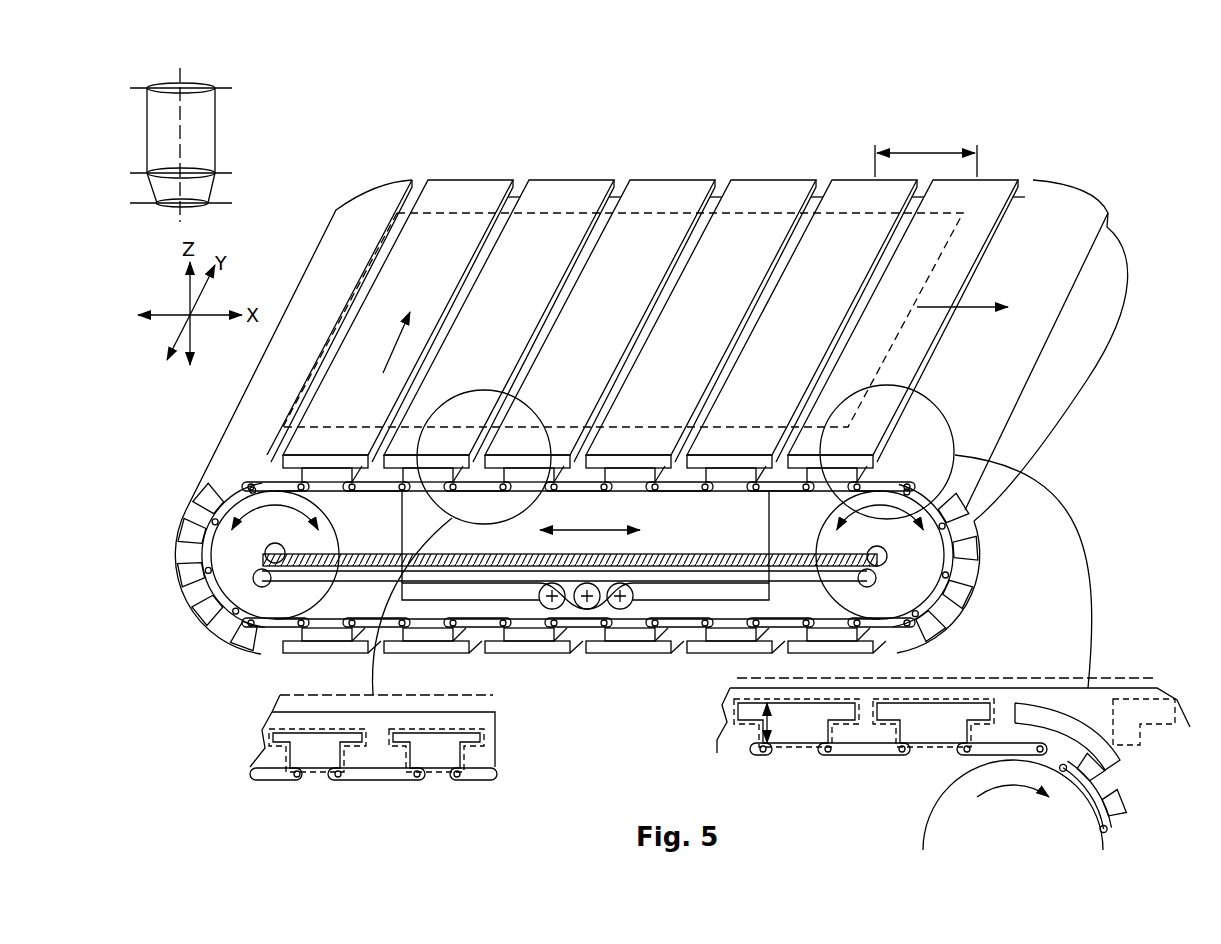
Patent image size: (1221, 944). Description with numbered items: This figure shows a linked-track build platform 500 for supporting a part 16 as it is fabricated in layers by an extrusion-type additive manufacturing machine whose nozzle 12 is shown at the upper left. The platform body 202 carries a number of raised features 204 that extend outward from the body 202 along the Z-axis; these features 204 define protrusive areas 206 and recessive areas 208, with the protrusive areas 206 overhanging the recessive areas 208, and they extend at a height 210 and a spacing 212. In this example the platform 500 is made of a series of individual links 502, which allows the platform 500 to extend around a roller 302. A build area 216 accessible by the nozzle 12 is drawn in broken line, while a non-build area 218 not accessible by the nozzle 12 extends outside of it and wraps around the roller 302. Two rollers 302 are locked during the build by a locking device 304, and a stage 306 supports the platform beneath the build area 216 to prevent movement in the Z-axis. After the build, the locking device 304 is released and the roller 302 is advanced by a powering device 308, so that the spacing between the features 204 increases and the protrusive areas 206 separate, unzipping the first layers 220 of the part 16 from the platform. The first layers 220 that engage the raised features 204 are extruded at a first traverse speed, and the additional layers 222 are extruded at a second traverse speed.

The nozzle 12 is at (218, 133).
The part 16 is at (953, 727).
The platform body 202 is at (320, 765).
The raised features 204 is at (435, 743).
The protrusive areas 206 is at (472, 197).
The recessive areas 208 is at (553, 197).
The height 210 is at (771, 722).
The spacing 212 is at (928, 150).
The build area 216 is at (380, 372).
The non-build area 218 is at (983, 313).
The first layers 220 is at (1003, 710).
The additional layers 222 is at (1025, 697).
The roller 302 is at (930, 810).
The locking device 304 is at (622, 610).
The stage 306 is at (538, 598).
The powering device 308 is at (585, 610).
The linked-track build platform 500 is at (651, 384).
The links 502 is at (383, 778).